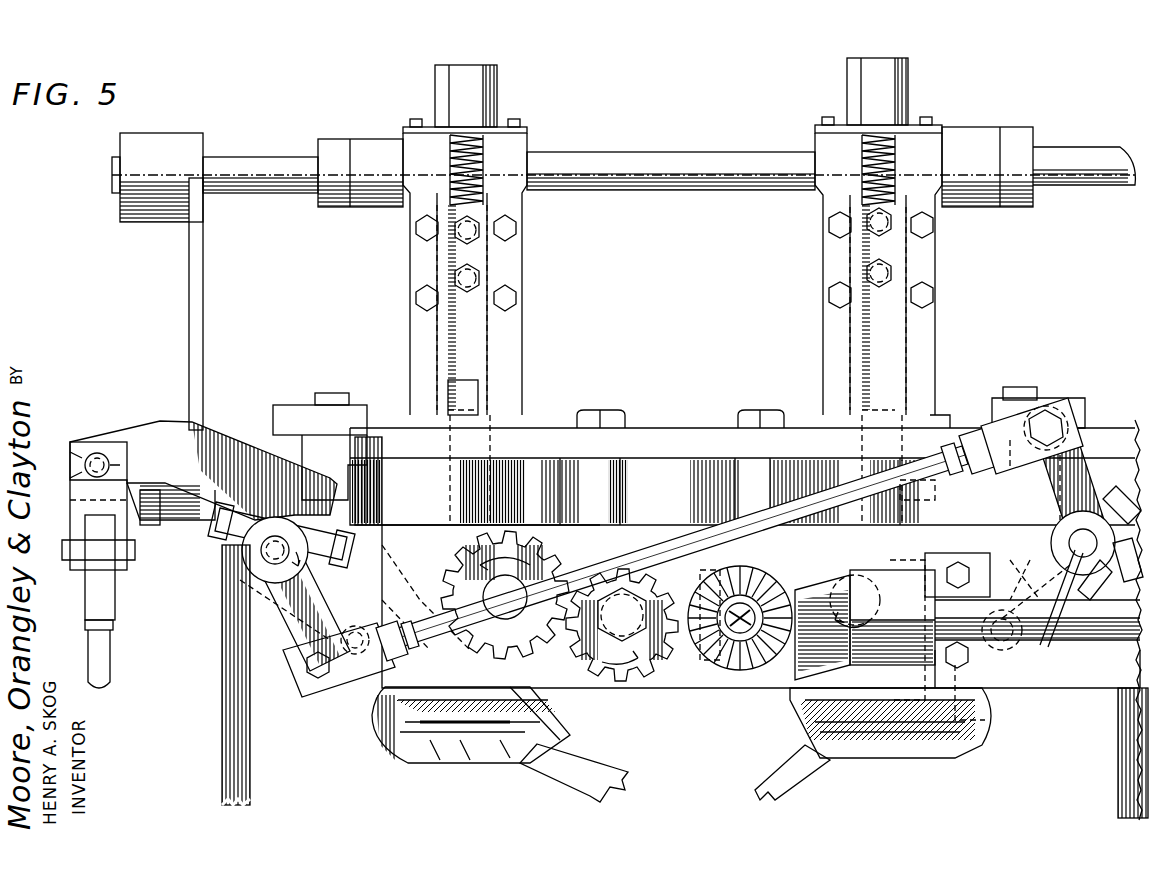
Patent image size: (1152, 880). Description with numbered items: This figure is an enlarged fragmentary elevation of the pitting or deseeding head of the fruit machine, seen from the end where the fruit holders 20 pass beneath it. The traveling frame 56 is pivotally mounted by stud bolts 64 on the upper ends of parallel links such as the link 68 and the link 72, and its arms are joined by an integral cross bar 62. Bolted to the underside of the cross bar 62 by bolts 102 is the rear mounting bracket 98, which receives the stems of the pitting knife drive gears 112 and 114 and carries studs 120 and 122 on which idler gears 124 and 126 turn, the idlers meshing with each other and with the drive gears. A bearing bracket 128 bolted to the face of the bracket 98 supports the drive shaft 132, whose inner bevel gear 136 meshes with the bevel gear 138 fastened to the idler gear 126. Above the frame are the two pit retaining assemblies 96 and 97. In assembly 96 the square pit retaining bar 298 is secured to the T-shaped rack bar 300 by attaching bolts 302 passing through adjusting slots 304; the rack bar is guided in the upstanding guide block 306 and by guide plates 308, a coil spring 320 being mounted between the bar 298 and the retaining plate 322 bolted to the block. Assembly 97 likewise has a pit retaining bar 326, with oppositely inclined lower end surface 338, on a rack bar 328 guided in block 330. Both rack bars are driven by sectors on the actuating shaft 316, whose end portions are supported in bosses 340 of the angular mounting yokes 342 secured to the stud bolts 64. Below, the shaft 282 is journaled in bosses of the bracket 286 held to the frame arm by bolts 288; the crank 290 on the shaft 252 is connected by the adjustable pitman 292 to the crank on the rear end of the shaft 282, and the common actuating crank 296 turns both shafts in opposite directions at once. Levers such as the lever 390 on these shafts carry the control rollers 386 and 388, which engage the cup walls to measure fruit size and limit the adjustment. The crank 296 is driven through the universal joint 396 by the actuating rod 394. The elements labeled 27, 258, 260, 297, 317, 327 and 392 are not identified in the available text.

The fruit holders 20 is at (490, 762).
The frame member 27 is at (965, 420).
The traveling frame 56 is at (673, 405).
The cross bar 62 is at (695, 435).
The stud bolts 64 is at (155, 522).
The parallel link 68 is at (250, 743).
The parallel link 72 is at (1130, 728).
The pit retaining assembly 96 is at (547, 290).
The pit retaining assembly 97 is at (808, 296).
The rear mounting bracket 98 is at (587, 680).
The bolts 102 is at (598, 412).
The pitting knife drive gear 112 is at (540, 560).
The pitting knife drive gear 114 is at (835, 548).
The stud 120 is at (605, 668).
The stud 122 is at (712, 680).
The idler gear 124 is at (658, 690).
The idler gear 126 is at (678, 655).
The bearing bracket 128 is at (898, 665).
The drive shaft 132 is at (1105, 660).
The bevel gear 136 is at (795, 685).
The bevel gear 138 is at (745, 665).
The shaft 252 is at (1035, 630).
The lever arm 258 is at (1072, 405).
The bolt 260 is at (1022, 388).
The shaft 282 is at (258, 560).
The bracket 286 is at (282, 412).
The bolts 288 is at (330, 395).
The crank 290 is at (1090, 455).
The adjustable pitman 292 is at (665, 548).
The common actuating crank 296 is at (150, 435).
The crank block 297 is at (285, 630).
The pit retaining bar 298 is at (478, 405).
The rack bar 300 is at (470, 93).
The attaching bolts 302 is at (482, 232).
The adjusting slots 304 is at (455, 285).
The guide block 306 is at (395, 200).
The guide plates 308 is at (412, 325).
The actuating shaft 316 is at (692, 172).
The collar 317 is at (373, 150).
The coil spring 320 is at (480, 168).
The retaining plate 322 is at (522, 130).
The pit retaining bar 326 is at (895, 350).
The plate 327 is at (440, 520).
The rack bar 328 is at (885, 88).
The guide block 330 is at (830, 190).
The lower end surface 338 is at (920, 490).
The bosses 340 is at (162, 207).
The angular mounting yokes 342 is at (190, 330).
The control roller 386 is at (1000, 720).
The control roller 388 is at (383, 592).
The lever 390 is at (1082, 548).
The plate 392 is at (383, 548).
The actuating rod 394 is at (110, 655).
The universal joint 396 is at (112, 578).